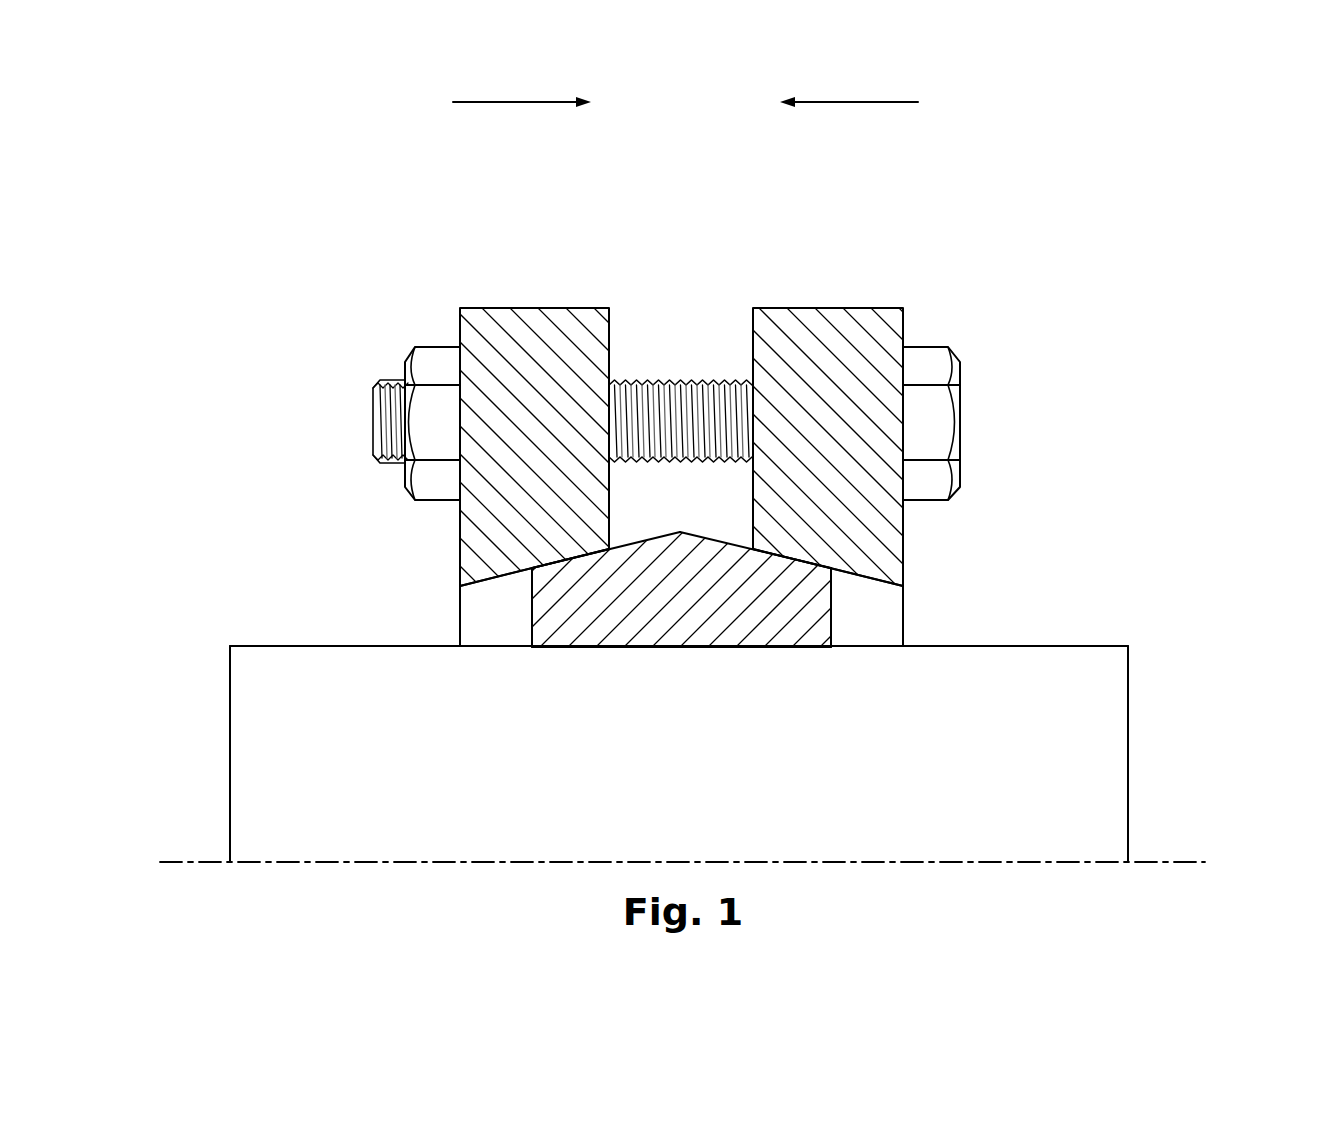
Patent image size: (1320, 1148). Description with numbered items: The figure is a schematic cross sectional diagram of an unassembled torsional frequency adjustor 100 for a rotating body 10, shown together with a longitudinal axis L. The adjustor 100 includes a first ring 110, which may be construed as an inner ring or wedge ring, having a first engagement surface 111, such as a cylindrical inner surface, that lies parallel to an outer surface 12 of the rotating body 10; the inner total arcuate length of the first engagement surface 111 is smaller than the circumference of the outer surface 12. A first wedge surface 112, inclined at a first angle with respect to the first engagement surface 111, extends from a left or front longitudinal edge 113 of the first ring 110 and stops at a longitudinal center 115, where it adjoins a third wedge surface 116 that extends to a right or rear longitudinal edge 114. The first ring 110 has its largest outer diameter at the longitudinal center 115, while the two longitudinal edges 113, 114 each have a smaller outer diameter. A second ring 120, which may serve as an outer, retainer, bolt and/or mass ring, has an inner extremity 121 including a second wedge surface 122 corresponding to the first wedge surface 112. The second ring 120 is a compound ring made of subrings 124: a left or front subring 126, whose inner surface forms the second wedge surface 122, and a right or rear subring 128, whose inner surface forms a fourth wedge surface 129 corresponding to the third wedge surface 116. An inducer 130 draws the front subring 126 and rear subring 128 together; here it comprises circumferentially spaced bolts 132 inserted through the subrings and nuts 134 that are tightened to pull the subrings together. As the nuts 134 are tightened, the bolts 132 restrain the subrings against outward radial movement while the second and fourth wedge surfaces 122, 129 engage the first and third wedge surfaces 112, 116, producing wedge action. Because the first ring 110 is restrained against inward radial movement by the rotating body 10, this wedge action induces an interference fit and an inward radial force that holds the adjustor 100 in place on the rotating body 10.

The rotating body 10 is at (1088, 748).
The outer surface 12 is at (960, 646).
The longitudinal axis L is at (1198, 852).
The torsional frequency adjustor 100 is at (1054, 173).
The first ring 110 is at (660, 614).
The first engagement surface 111 is at (757, 647).
The first wedge surface 112 is at (640, 540).
The left or front longitudinal edge 113 is at (527, 656).
The right or rear longitudinal edge 114 is at (834, 657).
The longitudinal center 115 is at (668, 657).
The third wedge surface 116 is at (718, 540).
The second ring 120 is at (458, 272).
The inner extremity 121 is at (418, 571).
The second wedge surface 122 is at (493, 588).
The subrings 124 is at (609, 341).
The left or front subring 126 is at (551, 446).
The right or rear subring 128 is at (849, 446).
The fourth wedge surface 129 is at (860, 588).
The inducer 130 is at (346, 360).
The bolts 132 is at (942, 412).
The nuts 134 is at (430, 426).